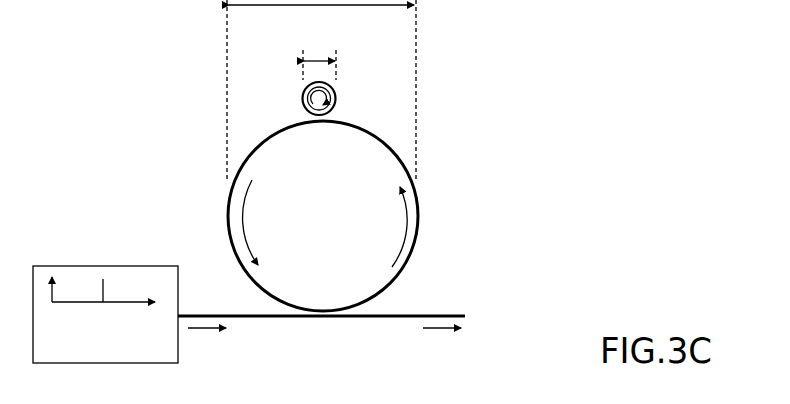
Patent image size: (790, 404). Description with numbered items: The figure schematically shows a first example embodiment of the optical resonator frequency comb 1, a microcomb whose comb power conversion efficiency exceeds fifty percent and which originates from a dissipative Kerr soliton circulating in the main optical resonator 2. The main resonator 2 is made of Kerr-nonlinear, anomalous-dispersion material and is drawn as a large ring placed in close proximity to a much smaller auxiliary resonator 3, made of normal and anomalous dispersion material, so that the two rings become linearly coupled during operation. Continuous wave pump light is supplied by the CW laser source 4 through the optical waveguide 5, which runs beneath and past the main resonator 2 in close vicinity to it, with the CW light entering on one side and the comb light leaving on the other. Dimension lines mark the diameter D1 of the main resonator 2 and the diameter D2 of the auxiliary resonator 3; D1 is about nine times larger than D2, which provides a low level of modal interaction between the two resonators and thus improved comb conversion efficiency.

The optical resonator frequency comb 1 is at (149, 88).
The main optical resonator 2 is at (290, 306).
The auxiliary resonator 3 is at (336, 100).
The continuous wave laser source 4 is at (140, 266).
The optical waveguide 5 is at (255, 318).
The diameter of the main resonator D1 is at (338, 8).
The diameter of the auxiliary resonator D2 is at (325, 61).